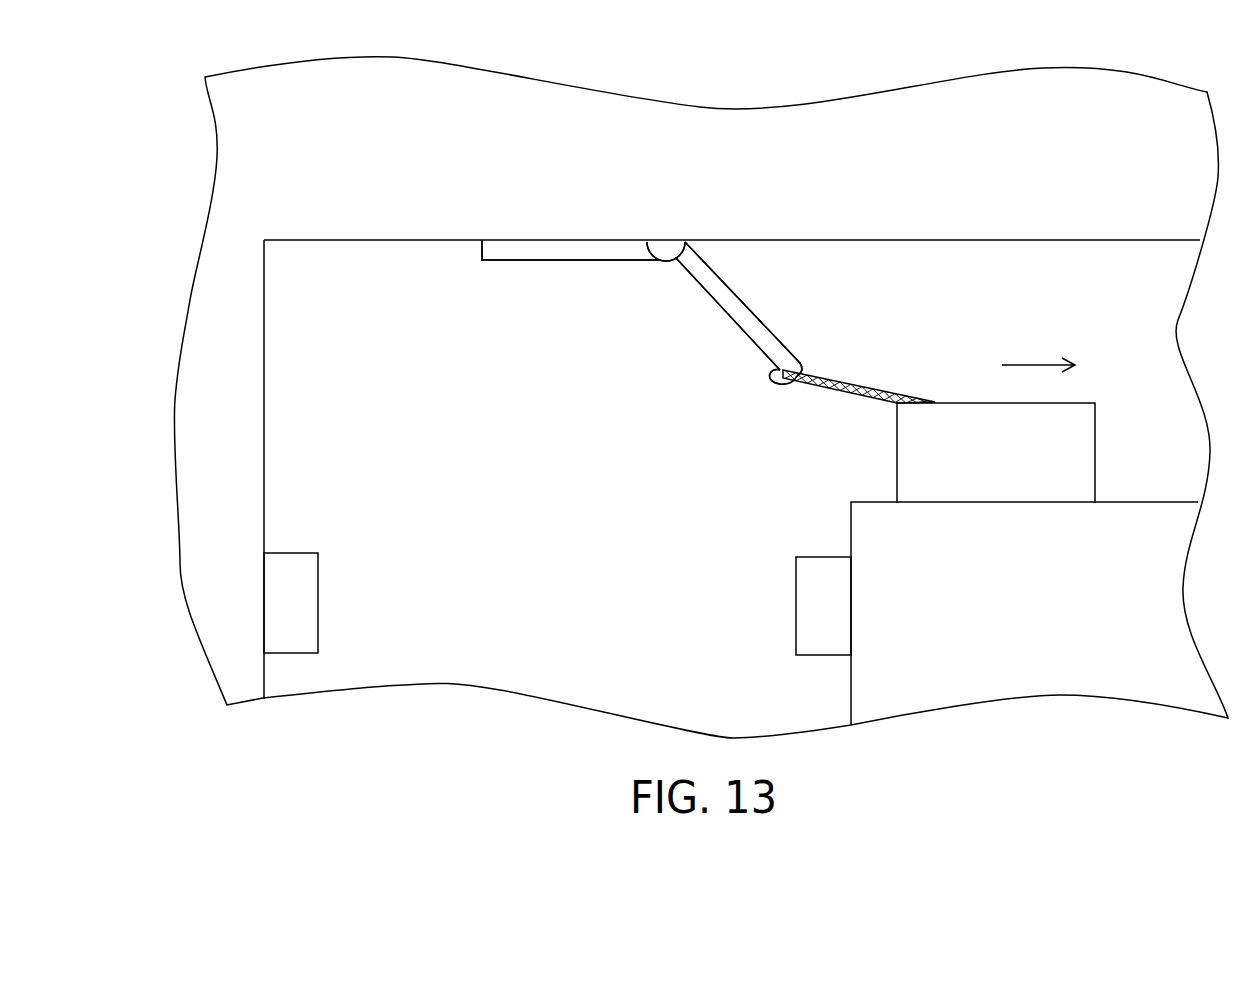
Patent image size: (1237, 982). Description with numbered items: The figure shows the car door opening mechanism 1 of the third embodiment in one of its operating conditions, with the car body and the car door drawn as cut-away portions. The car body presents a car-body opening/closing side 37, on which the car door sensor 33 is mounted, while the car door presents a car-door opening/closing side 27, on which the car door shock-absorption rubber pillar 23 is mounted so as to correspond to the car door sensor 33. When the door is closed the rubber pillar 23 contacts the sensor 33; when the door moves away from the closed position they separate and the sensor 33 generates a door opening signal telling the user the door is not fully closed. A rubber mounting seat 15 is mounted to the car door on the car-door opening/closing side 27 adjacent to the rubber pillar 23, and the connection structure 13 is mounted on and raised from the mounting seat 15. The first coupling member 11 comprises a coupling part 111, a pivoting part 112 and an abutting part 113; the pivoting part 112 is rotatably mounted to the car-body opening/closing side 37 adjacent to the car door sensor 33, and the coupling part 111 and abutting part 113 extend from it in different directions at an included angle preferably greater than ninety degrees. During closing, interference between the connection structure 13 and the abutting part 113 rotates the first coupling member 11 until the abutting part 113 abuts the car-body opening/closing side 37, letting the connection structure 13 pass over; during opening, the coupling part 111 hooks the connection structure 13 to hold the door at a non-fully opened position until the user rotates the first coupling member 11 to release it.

The car door opening mechanism 1 is at (1040, 177).
The car-body opening/closing side 37 is at (391, 207).
The car-door opening/closing side 27 is at (1016, 565).
The mounting seat 15 is at (1067, 460).
The connection structure 13 is at (880, 392).
The car door sensor 33 is at (293, 563).
The car door shock-absorption rubber pillar 23 is at (830, 568).
The first coupling member 11 is at (787, 180).
The abutting part 113 is at (580, 253).
The pivoting part 112 is at (665, 252).
The coupling part 111 is at (742, 310).